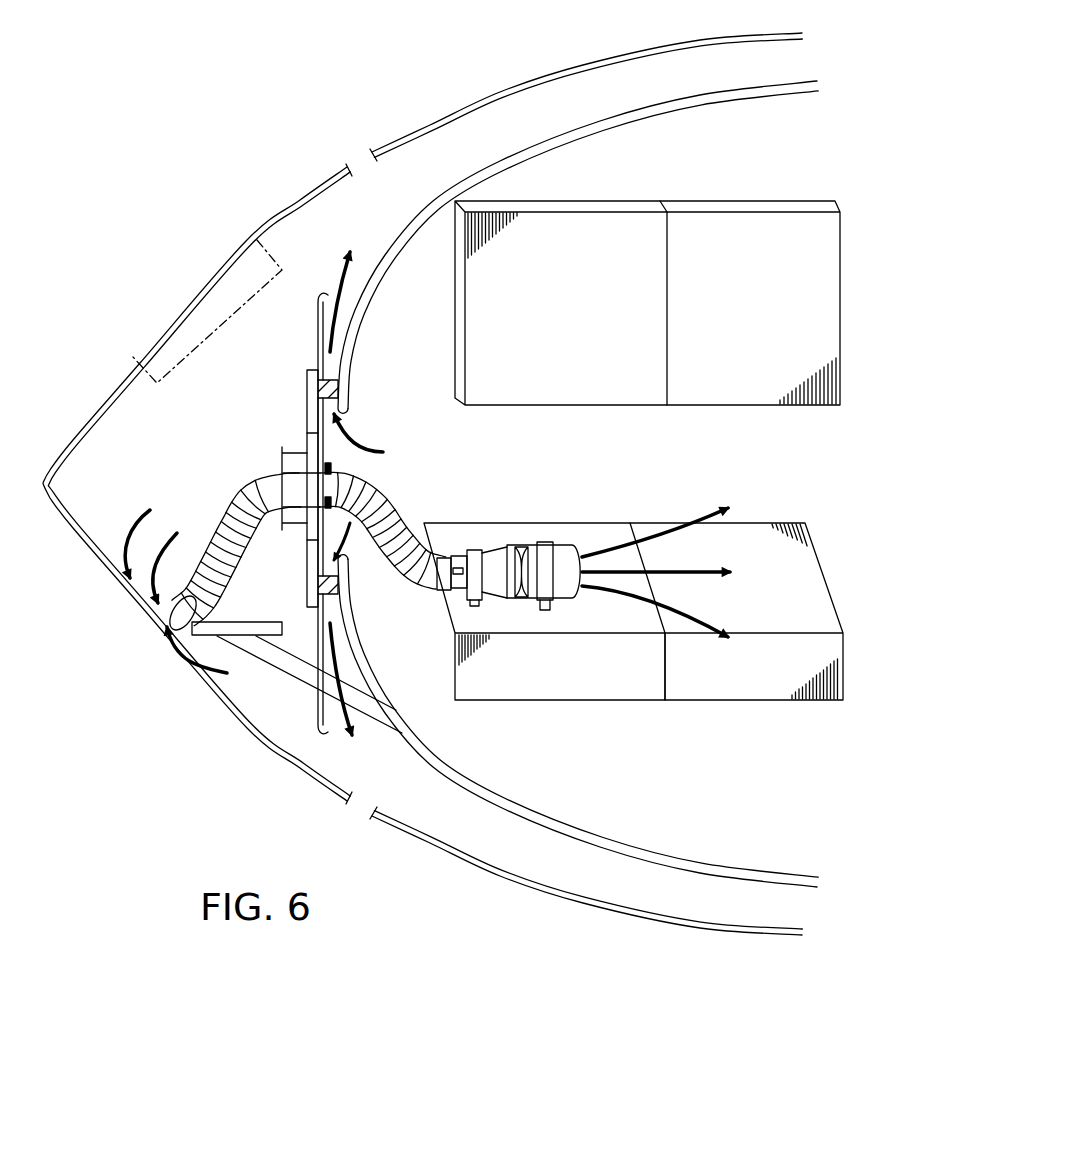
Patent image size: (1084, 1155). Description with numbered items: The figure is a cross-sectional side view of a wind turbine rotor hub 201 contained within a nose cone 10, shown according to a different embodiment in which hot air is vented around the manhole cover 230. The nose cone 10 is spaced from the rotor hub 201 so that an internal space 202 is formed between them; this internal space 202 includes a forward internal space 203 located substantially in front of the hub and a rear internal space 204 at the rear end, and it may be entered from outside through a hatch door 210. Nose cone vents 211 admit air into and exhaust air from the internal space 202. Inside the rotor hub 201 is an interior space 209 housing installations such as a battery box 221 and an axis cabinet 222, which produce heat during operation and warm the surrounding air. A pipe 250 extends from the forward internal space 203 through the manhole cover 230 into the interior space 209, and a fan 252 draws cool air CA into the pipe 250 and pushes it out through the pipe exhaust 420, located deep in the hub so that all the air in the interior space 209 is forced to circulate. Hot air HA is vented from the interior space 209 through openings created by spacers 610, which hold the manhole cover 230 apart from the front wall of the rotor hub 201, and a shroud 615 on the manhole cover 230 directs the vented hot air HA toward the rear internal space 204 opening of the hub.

The nose cone 10 is at (583, 70).
The rotor hub 201 is at (717, 95).
The internal space 202 is at (385, 227).
The forward internal space 203 is at (122, 509).
The rear internal space 204 is at (792, 74).
The interior space 209 is at (632, 472).
The hatch door 210 is at (183, 330).
The nose cone vents 211 is at (353, 163).
The battery box 221 is at (586, 319).
The axis cabinet 222 is at (770, 319).
The manhole cover 230 is at (316, 448).
The pipe 250 is at (225, 530).
The fan 252 is at (520, 548).
The pipe exhaust 420 is at (580, 590).
The spacers 610 is at (340, 387).
The shroud 615 is at (318, 334).
The hot air HA is at (332, 297).
The cool air CA is at (690, 527).